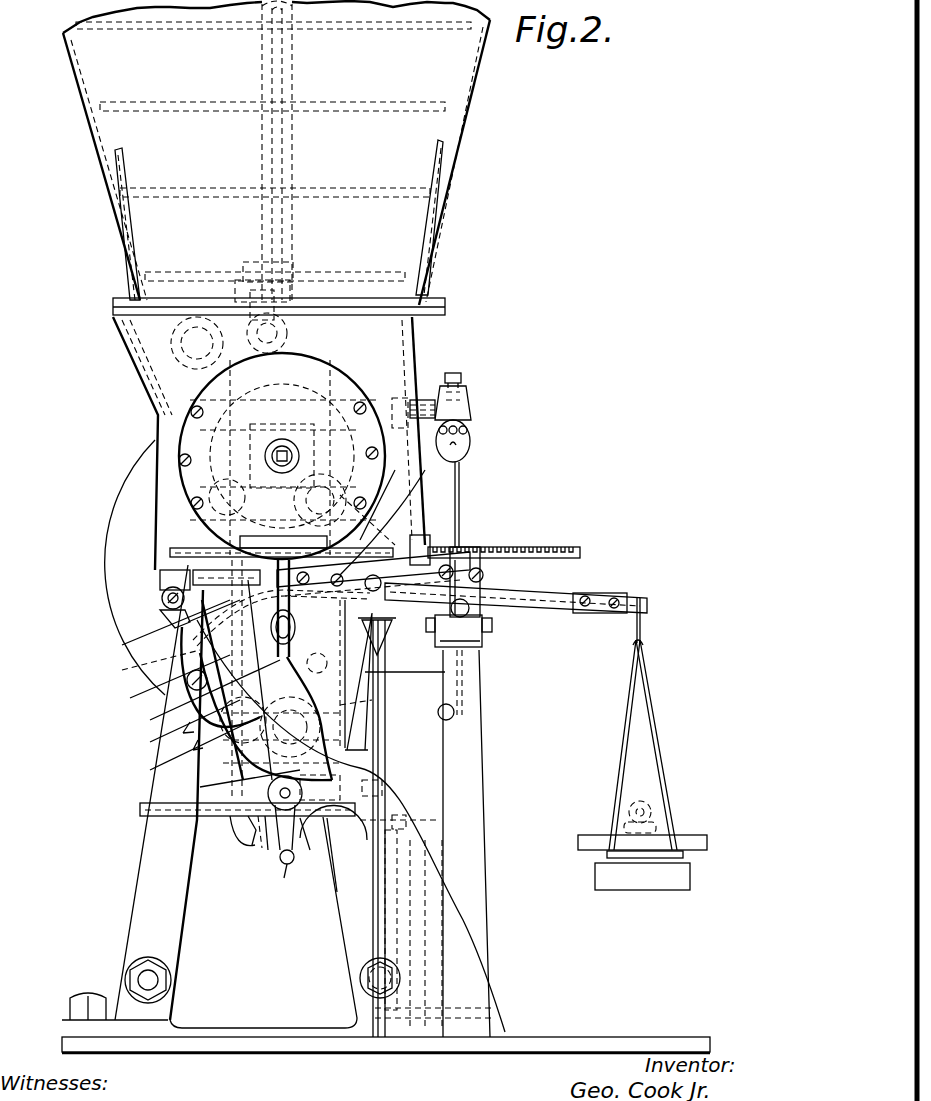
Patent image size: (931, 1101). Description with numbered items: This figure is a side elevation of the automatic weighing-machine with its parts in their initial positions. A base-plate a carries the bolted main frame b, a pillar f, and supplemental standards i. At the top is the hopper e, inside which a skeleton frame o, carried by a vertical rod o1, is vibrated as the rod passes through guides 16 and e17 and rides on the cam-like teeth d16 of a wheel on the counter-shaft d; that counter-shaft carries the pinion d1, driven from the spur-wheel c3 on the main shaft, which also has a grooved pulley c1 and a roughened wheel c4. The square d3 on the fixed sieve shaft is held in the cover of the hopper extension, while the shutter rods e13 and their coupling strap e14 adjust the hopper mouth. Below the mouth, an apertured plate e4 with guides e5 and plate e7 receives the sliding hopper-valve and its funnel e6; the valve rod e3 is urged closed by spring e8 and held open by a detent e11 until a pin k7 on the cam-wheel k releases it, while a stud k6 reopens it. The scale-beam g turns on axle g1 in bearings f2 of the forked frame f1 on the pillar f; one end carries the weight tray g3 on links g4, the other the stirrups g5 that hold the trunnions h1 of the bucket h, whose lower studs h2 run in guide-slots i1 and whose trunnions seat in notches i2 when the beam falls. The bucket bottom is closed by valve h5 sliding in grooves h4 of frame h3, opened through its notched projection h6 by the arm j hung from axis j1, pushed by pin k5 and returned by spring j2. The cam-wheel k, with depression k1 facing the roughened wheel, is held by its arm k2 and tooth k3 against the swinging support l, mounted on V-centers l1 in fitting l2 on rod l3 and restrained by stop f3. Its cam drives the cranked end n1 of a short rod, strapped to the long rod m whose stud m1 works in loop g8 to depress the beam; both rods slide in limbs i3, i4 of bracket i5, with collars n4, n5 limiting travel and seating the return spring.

The hopper e is at (103, 140).
The skeleton frame o is at (192, 197).
The vertical rod o1 is at (290, 245).
The axis of motion j1 is at (178, 455).
The pinion d1 is at (340, 400).
The counter-shaft d is at (270, 455).
The disc bolts 16 is at (254, 436).
The square d3 is at (300, 455).
The cam-like teeth d16 is at (402, 405).
The guide e17 is at (345, 390).
The plate e7 is at (252, 536).
The short funnel e6 is at (286, 548).
The spring e8 is at (155, 495).
The rods e13 is at (386, 484).
The block or strap e14 is at (399, 510).
The forked frame-like fitting l2 is at (466, 400).
The horizontal rod l3 is at (472, 402).
The V-centers l1 is at (472, 452).
The swinging support l is at (460, 478).
The apertured plate e4 is at (400, 548).
The guides e5 is at (392, 562).
The spring j2 is at (192, 566).
The loop g8 is at (478, 560).
The axle g1 is at (470, 585).
The bearings f2 is at (478, 600).
The scale-beam g is at (562, 597).
The links g4 is at (642, 632).
The tray or receptacle g3 is at (679, 836).
The pillar f is at (481, 790).
The forked frame f1 is at (486, 653).
The arm or lever k2 is at (455, 672).
The ratchet-like tooth k3 is at (465, 678).
The stop f3 is at (455, 712).
The vertical rod m is at (387, 737).
The stud m1 is at (388, 635).
The laterally-projecting stud k6 is at (385, 692).
The laterally-projecting pin k5 is at (392, 708).
The rectangular frame h3 is at (395, 800).
The standards i is at (455, 922).
The notches or bearings i2 is at (320, 789).
The limb i3 is at (420, 826).
The bracket i5 is at (430, 952).
The limb i4 is at (358, 1000).
The collar n4 is at (340, 888).
The collar n5 is at (350, 940).
The main frame b is at (146, 870).
The base-plate a is at (540, 1042).
The guide-grooves h4 is at (142, 812).
The grooved pulley c1 is at (160, 600).
The sliding rod e3 is at (162, 588).
The finger or detent e11 is at (162, 604).
The spur-wheel c3 is at (182, 630).
The link c4 is at (145, 669).
The pin or stud k7 is at (186, 682).
The loops or stirrups g5 is at (198, 697).
The trunnions or studs h1 is at (180, 729).
The cam-wheel or cylinder k is at (228, 721).
The depression k1 is at (280, 680).
The cranked upper end n1 is at (234, 788).
The arm or lever j is at (288, 866).
The bucket h is at (232, 818).
The guide-slots i1 is at (258, 816).
The shutter or valve h5 is at (242, 838).
The studs or projections h2 is at (270, 838).
The notched projection h6 is at (280, 870).